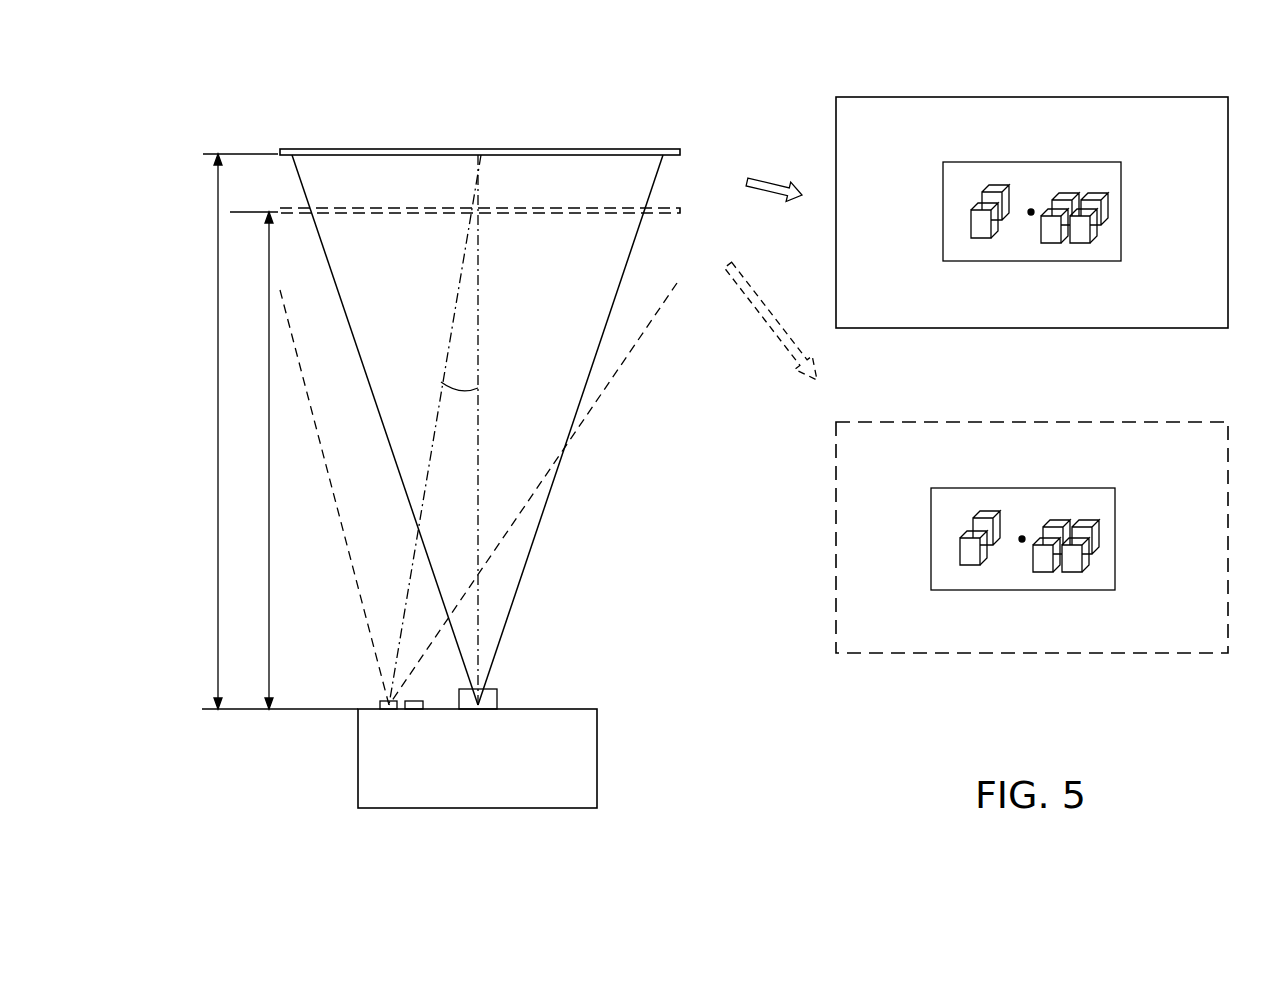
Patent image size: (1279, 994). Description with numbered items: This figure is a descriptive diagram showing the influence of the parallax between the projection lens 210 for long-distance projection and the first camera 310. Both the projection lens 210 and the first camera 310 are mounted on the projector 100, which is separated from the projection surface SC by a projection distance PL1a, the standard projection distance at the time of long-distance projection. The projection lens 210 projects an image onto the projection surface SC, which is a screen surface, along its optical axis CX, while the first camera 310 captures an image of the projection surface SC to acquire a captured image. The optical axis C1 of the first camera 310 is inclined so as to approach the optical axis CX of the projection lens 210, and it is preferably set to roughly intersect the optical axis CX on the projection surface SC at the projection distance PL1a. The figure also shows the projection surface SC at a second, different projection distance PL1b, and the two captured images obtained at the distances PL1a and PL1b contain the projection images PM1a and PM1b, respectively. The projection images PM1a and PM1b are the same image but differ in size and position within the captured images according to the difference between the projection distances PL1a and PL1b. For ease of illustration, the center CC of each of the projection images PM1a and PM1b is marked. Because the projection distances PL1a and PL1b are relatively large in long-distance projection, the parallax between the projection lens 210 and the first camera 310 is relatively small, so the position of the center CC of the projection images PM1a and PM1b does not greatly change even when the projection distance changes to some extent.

The projector 100 is at (598, 755).
The projection lens 210 is at (497, 701).
The first camera 310 is at (380, 704).
The projection surface SC is at (668, 157).
The projection distance PL1a is at (225, 431).
The projection distance PL1b is at (253, 460).
The optical axis of the projection lens CX is at (495, 430).
The optical axis of the first camera C1 is at (435, 430).
The projection image PM1a is at (1048, 162).
The projection image PM1b is at (1048, 488).
The center of the projection image CC is at (1031, 215).